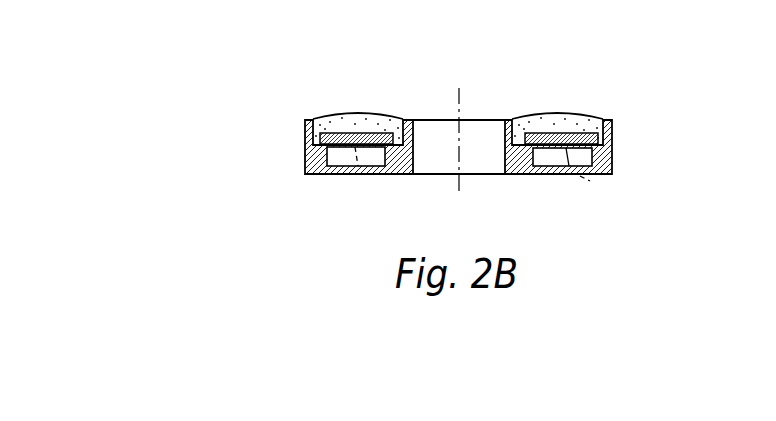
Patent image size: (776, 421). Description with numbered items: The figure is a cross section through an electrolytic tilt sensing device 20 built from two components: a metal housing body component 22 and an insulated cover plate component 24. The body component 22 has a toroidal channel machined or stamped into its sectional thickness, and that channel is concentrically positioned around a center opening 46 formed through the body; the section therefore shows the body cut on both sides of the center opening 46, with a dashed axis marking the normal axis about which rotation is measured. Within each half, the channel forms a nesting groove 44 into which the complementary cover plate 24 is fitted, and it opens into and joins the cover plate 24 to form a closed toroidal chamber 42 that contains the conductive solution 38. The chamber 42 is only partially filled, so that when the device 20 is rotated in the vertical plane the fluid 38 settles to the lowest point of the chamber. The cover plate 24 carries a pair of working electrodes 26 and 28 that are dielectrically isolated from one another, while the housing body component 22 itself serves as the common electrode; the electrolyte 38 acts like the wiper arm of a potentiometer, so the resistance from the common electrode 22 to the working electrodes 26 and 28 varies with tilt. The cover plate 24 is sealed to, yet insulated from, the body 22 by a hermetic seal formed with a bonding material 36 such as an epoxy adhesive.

The electrolytic tilt sensing device 20 is at (465, 139).
The housing body component 22 is at (305, 145).
The insulated cover plate component 24 is at (347, 124).
The working electrode 26 is at (356, 176).
The working electrode 28 is at (597, 183).
The bonding material 36 is at (328, 116).
The conductive solution 38 is at (368, 162).
The toroidal chamber 42 is at (333, 152).
The nesting groove 44 is at (376, 126).
The center opening 46 is at (476, 127).